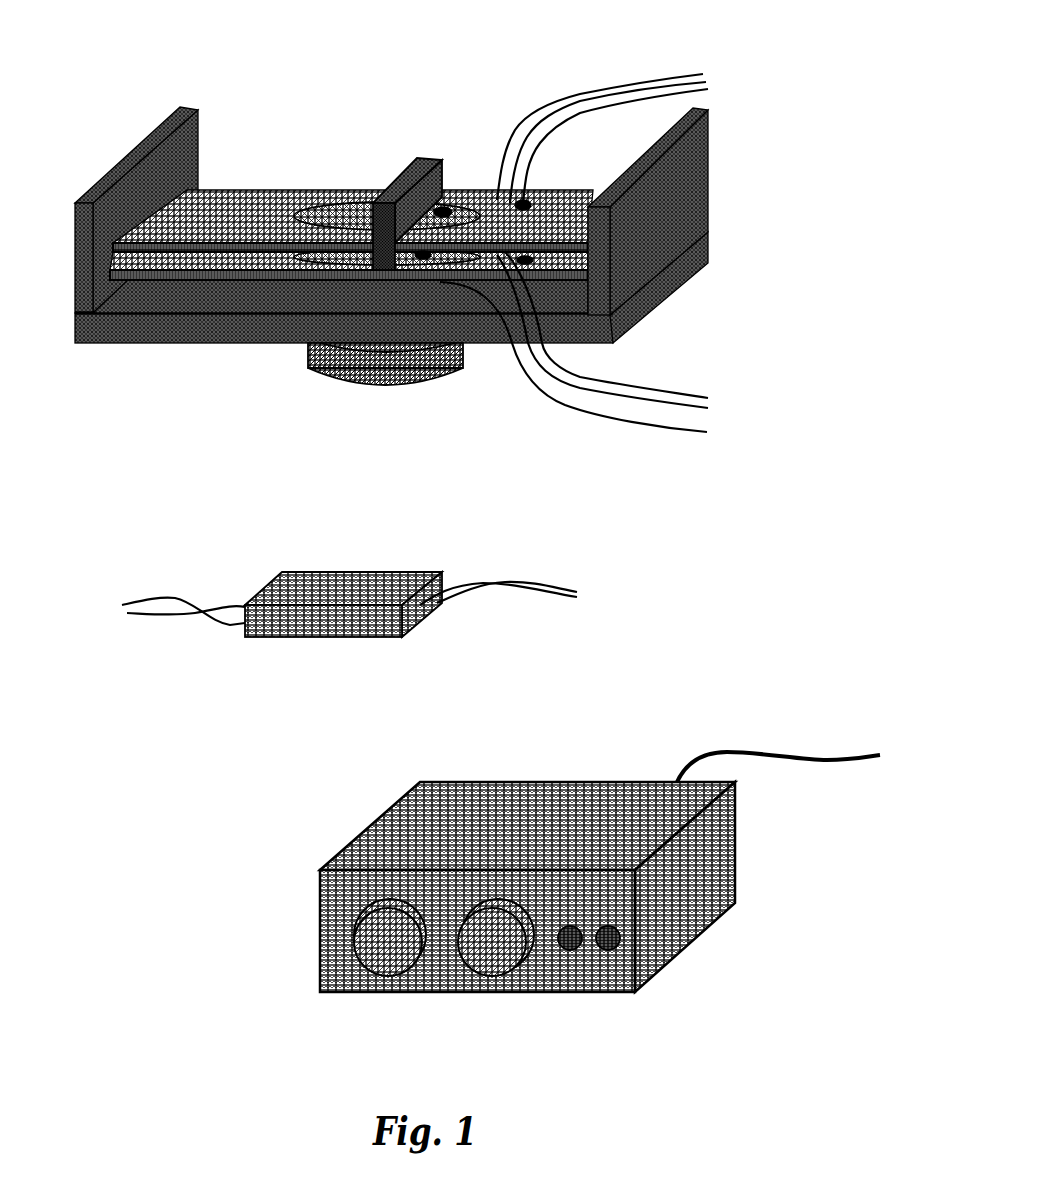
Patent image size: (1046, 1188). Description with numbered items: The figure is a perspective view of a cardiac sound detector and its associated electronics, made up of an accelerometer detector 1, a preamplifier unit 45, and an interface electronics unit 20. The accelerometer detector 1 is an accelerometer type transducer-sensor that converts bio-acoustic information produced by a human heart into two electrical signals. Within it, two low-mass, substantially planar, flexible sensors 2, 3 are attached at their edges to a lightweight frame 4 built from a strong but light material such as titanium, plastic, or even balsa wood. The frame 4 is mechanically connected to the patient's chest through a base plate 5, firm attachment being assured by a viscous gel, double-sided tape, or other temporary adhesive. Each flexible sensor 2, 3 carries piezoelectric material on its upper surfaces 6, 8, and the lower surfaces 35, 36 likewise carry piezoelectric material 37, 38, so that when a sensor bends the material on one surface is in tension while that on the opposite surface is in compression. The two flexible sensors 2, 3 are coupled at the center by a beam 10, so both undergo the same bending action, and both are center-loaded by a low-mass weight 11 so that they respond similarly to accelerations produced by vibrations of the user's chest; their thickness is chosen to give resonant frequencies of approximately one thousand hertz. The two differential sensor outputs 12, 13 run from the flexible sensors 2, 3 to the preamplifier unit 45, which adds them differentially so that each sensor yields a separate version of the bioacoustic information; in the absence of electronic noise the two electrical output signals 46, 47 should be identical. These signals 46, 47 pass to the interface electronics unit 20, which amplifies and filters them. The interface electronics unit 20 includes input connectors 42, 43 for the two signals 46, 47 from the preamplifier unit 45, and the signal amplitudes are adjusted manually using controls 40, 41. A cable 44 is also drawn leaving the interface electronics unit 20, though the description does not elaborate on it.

The accelerometer detector 1 is at (255, 88).
The flexible sensor 2 is at (563, 223).
The flexible sensor 3 is at (219, 267).
The frame 4 is at (148, 335).
The base plate 5 is at (306, 356).
The upper surface 6 is at (350, 212).
The upper surface 8 is at (340, 255).
The beam 10 is at (388, 257).
The low-mass weight 11 is at (437, 180).
The differential sensor output 12 is at (182, 593).
The differential sensor output 13 is at (195, 633).
The lower surface 35 is at (563, 265).
The lower surface 36 is at (243, 288).
The piezoelectric material 37 is at (307, 262).
The piezoelectric material 38 is at (349, 278).
The interface electronics unit 20 is at (552, 755).
The control 40 is at (372, 972).
The control 41 is at (473, 972).
The input connector 42 is at (573, 960).
The input connector 43 is at (627, 940).
The output cable 44 is at (842, 768).
The preamplifier unit 45 is at (326, 552).
The electrical output signal 46 is at (462, 608).
The electrical output signal 47 is at (492, 588).